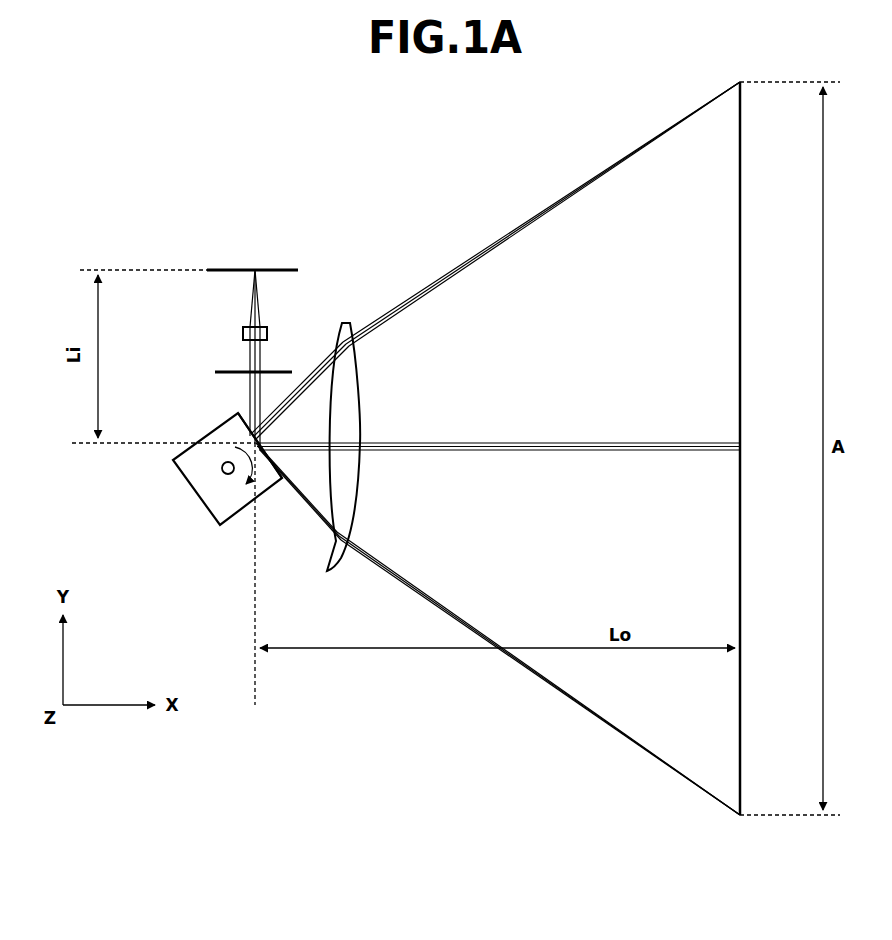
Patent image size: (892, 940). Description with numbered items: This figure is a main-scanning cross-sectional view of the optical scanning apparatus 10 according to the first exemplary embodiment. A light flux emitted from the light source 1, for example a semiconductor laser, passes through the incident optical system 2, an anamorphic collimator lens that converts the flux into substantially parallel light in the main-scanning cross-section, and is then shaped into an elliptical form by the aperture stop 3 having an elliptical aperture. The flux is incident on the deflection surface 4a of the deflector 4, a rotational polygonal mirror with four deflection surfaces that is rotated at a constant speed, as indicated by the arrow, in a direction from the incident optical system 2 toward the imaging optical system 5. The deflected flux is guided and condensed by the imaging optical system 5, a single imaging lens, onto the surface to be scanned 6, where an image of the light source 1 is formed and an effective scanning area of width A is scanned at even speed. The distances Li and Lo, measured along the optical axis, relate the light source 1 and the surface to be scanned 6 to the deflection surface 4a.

The light source 1 is at (272, 270).
The incident optical system 2 is at (243, 333).
The aperture stop 3 is at (226, 371).
The deflector 4 is at (207, 483).
The deflection surface 4a is at (292, 446).
The imaging optical system 5 is at (361, 378).
The surface to be scanned 6 is at (741, 296).
The optical scanning apparatus 10 is at (478, 815).